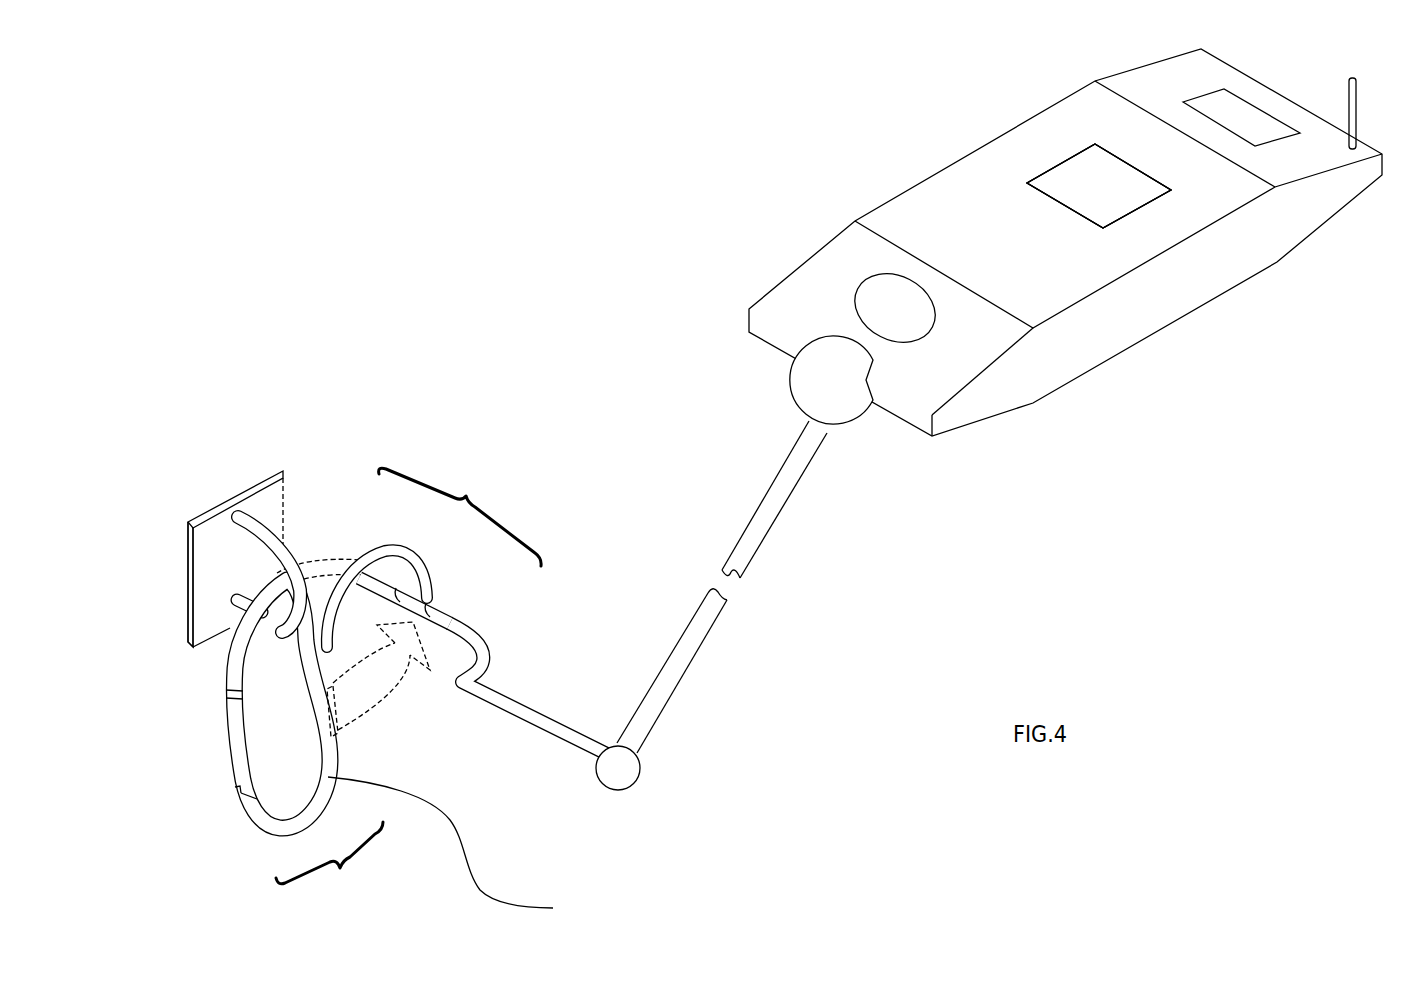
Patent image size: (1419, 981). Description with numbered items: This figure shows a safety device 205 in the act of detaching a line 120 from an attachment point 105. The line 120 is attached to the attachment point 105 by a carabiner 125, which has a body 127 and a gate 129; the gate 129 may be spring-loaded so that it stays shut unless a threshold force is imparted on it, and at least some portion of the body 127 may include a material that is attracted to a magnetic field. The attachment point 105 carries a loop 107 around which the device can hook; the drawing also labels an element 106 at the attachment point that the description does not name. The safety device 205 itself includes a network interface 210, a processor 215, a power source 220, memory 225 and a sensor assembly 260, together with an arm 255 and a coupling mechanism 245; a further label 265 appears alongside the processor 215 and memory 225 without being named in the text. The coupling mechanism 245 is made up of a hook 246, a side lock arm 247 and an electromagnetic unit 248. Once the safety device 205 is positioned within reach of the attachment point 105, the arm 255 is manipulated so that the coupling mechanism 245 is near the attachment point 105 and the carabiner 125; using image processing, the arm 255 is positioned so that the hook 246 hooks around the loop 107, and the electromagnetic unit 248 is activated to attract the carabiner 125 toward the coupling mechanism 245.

The attachment point 105 is at (188, 575).
The anchor plate 106 is at (236, 496).
The loop 107 is at (292, 547).
The line 120 is at (470, 857).
The carabiner 125 is at (329, 862).
The body 127 is at (310, 825).
The gate 129 is at (230, 732).
The safety device 205 is at (922, 187).
The network interface 210 is at (1358, 112).
The processor 215 is at (1078, 151).
The power source 220 is at (1258, 108).
The memory 225 is at (1078, 151).
The coupling mechanism 245 is at (460, 517).
The hook 246 is at (327, 568).
The side lock arm 247 is at (408, 553).
The electromagnetic unit 248 is at (455, 625).
The arm 255 is at (617, 760).
The sensor assembly 260 is at (867, 280).
The indicator 265 is at (1078, 151).